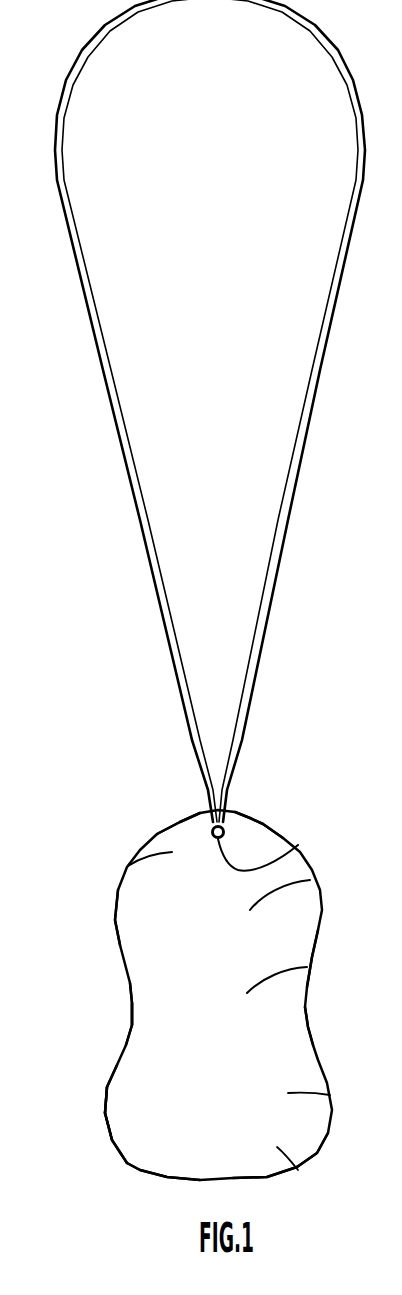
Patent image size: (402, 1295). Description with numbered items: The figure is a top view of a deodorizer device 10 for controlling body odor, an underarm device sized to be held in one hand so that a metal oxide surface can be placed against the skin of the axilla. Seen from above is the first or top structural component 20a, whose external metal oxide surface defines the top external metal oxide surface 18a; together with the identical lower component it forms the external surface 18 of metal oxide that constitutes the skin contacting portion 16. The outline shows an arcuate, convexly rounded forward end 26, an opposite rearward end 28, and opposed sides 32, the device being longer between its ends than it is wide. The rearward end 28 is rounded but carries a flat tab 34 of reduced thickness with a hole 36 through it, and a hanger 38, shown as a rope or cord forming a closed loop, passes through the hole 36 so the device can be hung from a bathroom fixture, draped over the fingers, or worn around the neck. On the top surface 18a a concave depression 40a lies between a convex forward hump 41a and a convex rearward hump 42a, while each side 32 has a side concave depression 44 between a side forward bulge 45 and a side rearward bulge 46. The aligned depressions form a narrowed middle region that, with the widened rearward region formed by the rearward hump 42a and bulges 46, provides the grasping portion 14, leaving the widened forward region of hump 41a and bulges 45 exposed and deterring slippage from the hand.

The deodorizer device 10 is at (55, 915).
The grasping portion 14 is at (122, 999).
The skin contacting portion 16 is at (105, 1157).
The external surface 18 is at (151, 1150).
The top external metal oxide surface 18a is at (298, 1170).
The first structural component 20a is at (132, 1087).
The forward end 26 is at (266, 1180).
The rearward end 28 is at (172, 826).
The opposed sides 32 is at (118, 942).
The flat tab 34 is at (260, 830).
The hole 36 is at (263, 853).
The hanger 38 is at (140, 558).
The top concave depression 40a is at (307, 967).
The top convex forward hump 41a is at (330, 1095).
The top convex rearward hump 42a is at (310, 880).
The side concave depression 44 is at (130, 1020).
The side forward bulge 45 is at (105, 1110).
The side rearward bulge 46 is at (123, 902).